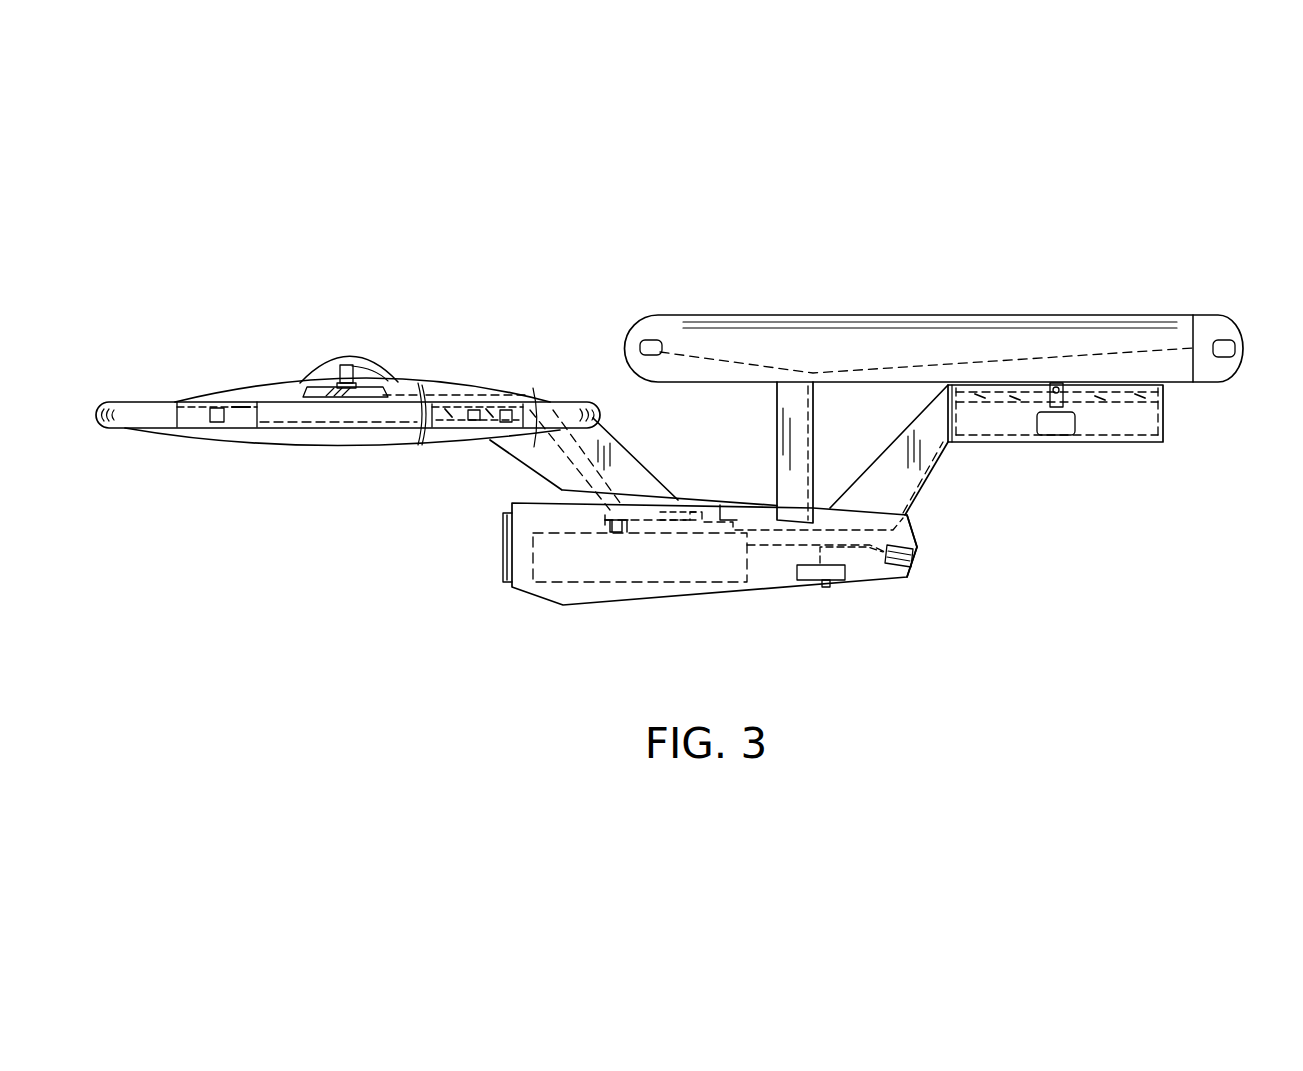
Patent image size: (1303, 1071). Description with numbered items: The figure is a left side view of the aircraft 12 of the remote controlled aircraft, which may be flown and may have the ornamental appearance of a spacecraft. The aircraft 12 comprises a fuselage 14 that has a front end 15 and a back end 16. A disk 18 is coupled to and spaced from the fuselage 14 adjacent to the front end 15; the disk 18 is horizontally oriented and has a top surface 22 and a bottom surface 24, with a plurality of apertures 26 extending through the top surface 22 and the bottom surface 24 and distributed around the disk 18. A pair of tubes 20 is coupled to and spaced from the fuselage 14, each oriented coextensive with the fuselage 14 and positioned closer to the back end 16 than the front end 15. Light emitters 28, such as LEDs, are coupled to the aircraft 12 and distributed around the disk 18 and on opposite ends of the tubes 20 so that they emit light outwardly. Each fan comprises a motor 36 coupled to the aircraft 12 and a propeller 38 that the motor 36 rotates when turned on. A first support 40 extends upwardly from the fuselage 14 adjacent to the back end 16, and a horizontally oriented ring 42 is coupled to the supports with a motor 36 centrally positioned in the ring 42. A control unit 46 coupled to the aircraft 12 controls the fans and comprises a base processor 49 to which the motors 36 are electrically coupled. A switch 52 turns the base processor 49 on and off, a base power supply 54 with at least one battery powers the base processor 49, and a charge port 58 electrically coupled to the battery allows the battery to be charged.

The aircraft 12 is at (770, 252).
The fuselage 14 is at (748, 593).
The front end 15 is at (503, 553).
The back end 16 is at (916, 546).
The disk 18 is at (108, 404).
The tubes 20 is at (940, 315).
The top surface 22 is at (282, 380).
The bottom surface 24 is at (310, 442).
The apertures 26 is at (503, 412).
The light emitters 28 is at (343, 362).
The motor 36 is at (210, 419).
The propeller 38 is at (240, 412).
The first support 40 is at (897, 437).
The ring 42 is at (1165, 405).
The control unit 46 is at (682, 498).
The base processor 49 is at (611, 527).
The switch 52 is at (826, 588).
The base power supply 54 is at (556, 588).
The charge port 58 is at (898, 578).